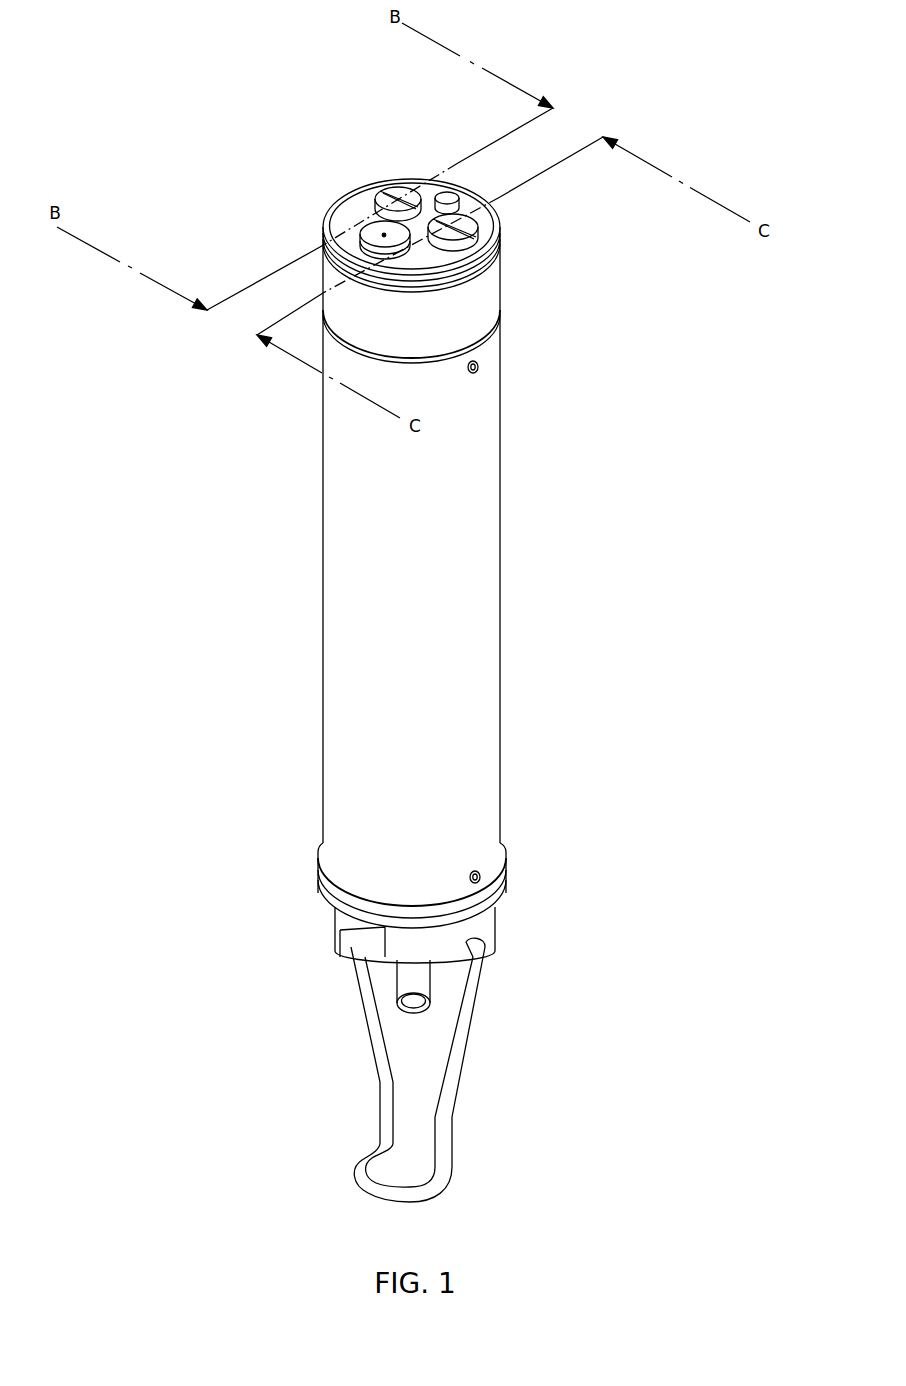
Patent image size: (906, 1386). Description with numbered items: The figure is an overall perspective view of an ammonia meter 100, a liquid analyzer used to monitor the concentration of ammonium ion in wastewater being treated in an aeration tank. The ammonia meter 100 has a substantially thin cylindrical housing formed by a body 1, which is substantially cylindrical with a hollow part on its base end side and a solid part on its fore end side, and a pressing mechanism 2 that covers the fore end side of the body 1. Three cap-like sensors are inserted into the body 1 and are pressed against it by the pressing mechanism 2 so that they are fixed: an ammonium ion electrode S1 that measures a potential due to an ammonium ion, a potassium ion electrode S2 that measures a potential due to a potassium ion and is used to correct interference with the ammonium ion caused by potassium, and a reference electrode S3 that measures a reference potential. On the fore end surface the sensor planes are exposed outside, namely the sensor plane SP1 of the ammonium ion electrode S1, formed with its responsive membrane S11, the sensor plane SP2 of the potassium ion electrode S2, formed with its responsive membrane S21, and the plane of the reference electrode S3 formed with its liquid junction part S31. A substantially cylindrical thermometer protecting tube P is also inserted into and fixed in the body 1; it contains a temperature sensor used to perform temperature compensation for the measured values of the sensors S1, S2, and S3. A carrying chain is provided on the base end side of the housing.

The ammonia meter 100 is at (245, 200).
The body 1 is at (502, 561).
The pressing mechanism 2 is at (500, 278).
The ammonium ion electrode S1 is at (382, 176).
The sensor plane SP1 is at (393, 188).
The responsive membrane S11 is at (403, 197).
The thermometer protecting tube P is at (447, 192).
The potassium ion electrode S2 is at (488, 200).
The sensor plane SP2 is at (440, 222).
The responsive membrane S21 is at (470, 235).
The reference electrode S3 is at (333, 243).
The liquid junction part S31 is at (386, 240).